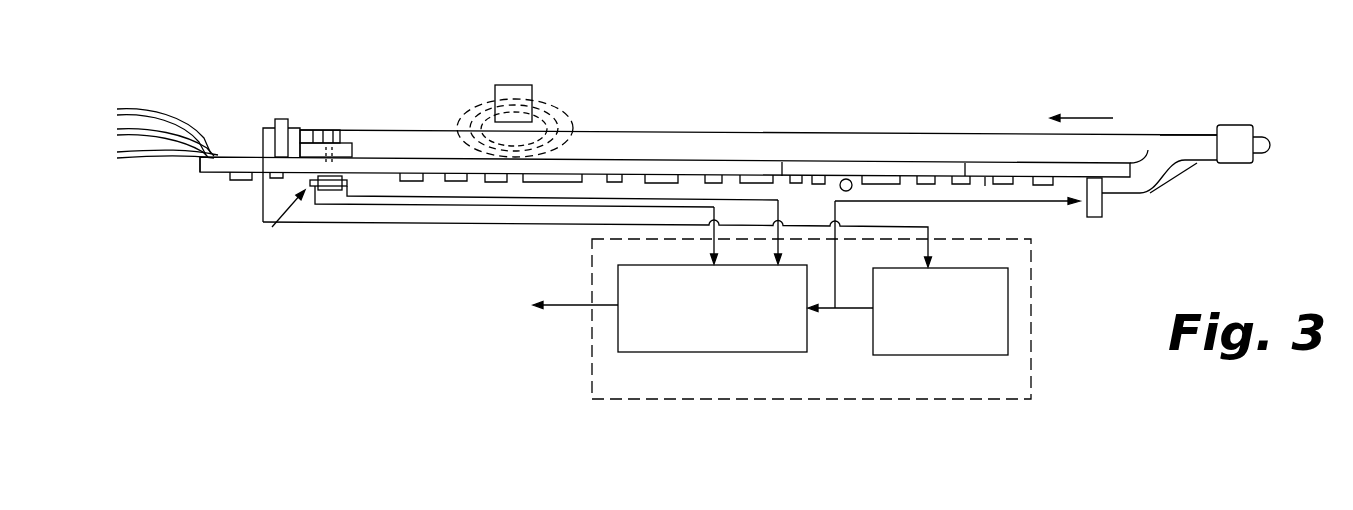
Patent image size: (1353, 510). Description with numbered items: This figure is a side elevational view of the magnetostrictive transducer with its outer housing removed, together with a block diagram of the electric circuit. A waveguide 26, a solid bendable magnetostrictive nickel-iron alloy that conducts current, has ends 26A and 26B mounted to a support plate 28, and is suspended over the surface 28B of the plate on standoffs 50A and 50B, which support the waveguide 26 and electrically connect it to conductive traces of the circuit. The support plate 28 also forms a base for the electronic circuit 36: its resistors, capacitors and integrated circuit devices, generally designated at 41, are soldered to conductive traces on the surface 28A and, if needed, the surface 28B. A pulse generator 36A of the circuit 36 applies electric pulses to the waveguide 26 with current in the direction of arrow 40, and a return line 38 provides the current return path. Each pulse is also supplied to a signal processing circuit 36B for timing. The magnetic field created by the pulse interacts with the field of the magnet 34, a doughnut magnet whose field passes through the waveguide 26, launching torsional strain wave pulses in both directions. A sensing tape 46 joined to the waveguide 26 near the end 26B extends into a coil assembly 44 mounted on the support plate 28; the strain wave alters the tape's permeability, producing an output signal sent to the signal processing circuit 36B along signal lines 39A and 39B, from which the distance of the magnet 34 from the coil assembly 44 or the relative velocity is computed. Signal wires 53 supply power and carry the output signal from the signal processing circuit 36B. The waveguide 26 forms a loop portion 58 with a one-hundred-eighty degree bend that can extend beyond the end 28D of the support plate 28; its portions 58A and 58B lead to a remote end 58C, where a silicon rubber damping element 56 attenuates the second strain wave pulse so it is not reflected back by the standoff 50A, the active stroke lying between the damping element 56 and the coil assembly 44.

The waveguide 26 is at (648, 130).
The end of waveguide 26A is at (1078, 207).
The end of waveguide 26B is at (263, 130).
The support plate 28 is at (970, 172).
The surface of support plate 28A is at (845, 178).
The surface of support plate 28B is at (782, 162).
The end of support plate 28D is at (1148, 150).
The magnet 34 is at (510, 95).
The electronic circuit 36 is at (1031, 345).
The pulse generator 36A is at (883, 355).
The signal processing circuit 36B is at (655, 353).
The return line 38 is at (263, 210).
The signal line 39A is at (348, 207).
The signal line 39B is at (402, 200).
The arrow 40 is at (1081, 106).
The components 41 is at (989, 199).
The coil assembly 44 is at (280, 232).
The sensing tape 46 is at (340, 135).
The standoff 50A is at (1097, 217).
The standoff 50B is at (283, 120).
The signal wires 53 is at (161, 101).
The damping element 56 is at (1240, 124).
The loop portion 58 is at (1203, 114).
The cable lower portion 58A is at (1197, 163).
The cable upper portion 58B is at (1173, 135).
The remote end of loop portion 58C is at (1272, 134).